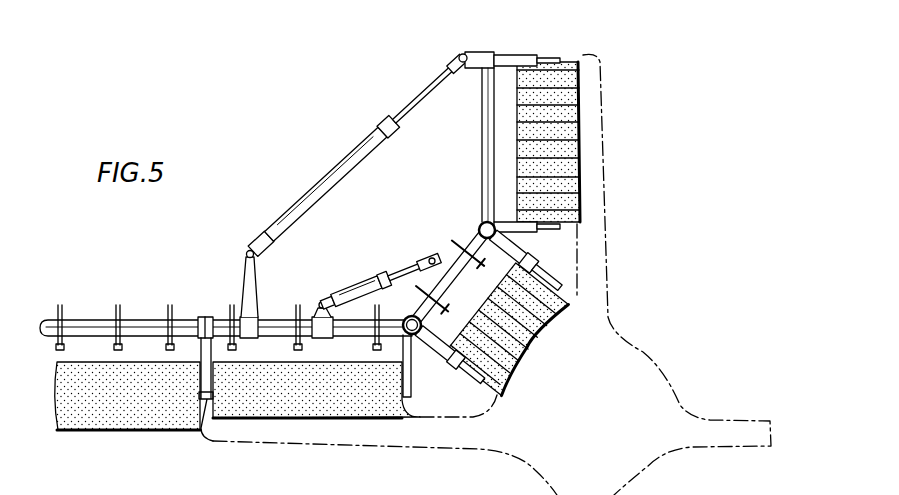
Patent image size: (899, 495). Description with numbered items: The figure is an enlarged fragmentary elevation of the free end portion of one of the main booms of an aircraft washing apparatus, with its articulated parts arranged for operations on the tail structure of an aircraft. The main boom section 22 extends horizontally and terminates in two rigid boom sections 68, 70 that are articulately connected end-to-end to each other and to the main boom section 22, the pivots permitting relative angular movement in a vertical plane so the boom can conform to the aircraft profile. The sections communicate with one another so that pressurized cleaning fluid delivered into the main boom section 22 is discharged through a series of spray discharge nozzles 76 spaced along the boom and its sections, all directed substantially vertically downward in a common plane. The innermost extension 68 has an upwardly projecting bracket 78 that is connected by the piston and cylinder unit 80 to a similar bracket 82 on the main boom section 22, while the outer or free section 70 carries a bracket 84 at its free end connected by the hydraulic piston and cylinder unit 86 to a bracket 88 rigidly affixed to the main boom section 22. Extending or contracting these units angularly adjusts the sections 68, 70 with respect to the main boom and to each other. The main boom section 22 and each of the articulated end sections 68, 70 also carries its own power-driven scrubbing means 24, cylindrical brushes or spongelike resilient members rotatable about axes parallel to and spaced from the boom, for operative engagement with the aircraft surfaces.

The main boom section 22 is at (97, 322).
The scrubbing means 24 is at (136, 409).
The boom section 68 is at (477, 240).
The boom section 70 is at (483, 155).
The spray discharge nozzles 76 is at (377, 350).
The bracket 78 is at (443, 268).
The piston and cylinder unit 80 is at (361, 282).
The bracket 82 is at (314, 303).
The bracket 84 is at (470, 55).
The hydraulic piston and cylinder unit 86 is at (350, 153).
The bracket 88 is at (247, 283).